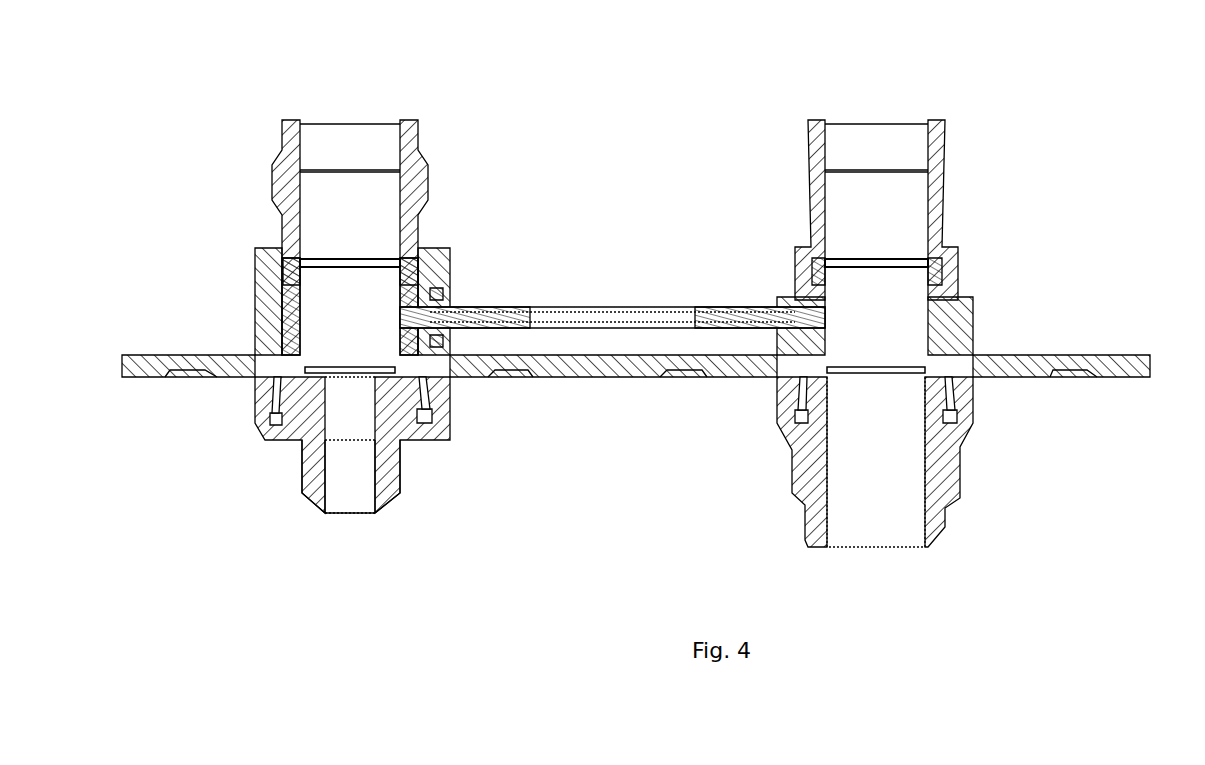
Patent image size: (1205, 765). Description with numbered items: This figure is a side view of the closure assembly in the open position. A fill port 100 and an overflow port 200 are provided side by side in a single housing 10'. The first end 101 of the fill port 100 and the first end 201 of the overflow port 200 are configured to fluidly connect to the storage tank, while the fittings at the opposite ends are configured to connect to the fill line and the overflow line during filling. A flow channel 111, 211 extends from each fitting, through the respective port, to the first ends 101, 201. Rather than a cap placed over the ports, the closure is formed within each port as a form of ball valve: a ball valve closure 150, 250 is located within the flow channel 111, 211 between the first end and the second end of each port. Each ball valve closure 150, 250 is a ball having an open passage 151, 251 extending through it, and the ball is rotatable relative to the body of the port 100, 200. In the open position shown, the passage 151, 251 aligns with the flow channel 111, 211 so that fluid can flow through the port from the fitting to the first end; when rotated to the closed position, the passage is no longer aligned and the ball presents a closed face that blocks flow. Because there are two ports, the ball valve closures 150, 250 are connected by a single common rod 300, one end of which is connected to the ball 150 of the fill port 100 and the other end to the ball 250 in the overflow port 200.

The housing 10' is at (636, 306).
The fill port 100 is at (361, 325).
The first end of the fill port 101 is at (368, 513).
The flow channel 111 is at (345, 208).
The ball valve closure 150 is at (403, 295).
The open passage 151 is at (343, 318).
The overflow port 200 is at (991, 368).
The first end of the overflow port 201 is at (885, 535).
The flow channel 211 is at (900, 208).
The ball valve closure 250 is at (950, 292).
The open passage 251 is at (884, 326).
The common rod 300 is at (735, 318).